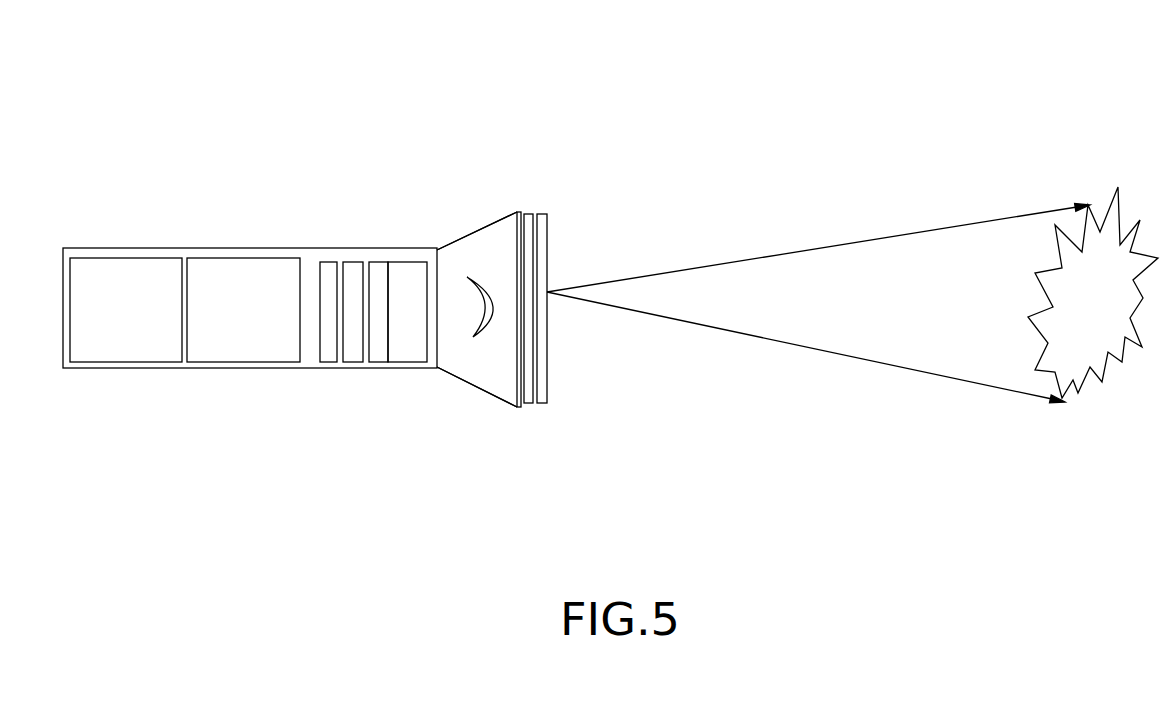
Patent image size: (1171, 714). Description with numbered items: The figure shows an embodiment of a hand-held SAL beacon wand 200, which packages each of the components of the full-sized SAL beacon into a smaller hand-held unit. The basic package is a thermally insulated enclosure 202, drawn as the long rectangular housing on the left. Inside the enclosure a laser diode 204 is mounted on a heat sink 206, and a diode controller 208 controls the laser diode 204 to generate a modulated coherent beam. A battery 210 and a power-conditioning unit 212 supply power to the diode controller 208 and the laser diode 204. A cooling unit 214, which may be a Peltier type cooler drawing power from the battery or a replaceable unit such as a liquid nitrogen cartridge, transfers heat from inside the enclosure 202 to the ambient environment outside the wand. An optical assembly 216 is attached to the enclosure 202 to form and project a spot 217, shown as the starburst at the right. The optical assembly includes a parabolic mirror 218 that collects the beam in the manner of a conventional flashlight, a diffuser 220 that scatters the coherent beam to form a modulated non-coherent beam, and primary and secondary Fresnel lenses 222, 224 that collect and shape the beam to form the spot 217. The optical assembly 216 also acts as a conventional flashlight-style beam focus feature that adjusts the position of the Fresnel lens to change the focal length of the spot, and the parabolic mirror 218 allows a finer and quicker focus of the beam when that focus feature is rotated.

The hand-held SAL beacon wand 200 is at (486, 82).
The thermally insulated enclosure 202 is at (103, 370).
The laser diode 204 is at (406, 366).
The heat sink 206 is at (378, 366).
The diode controller 208 is at (351, 366).
The battery 210 is at (225, 341).
The power-conditioning unit 212 is at (328, 365).
The cooling unit 214 is at (107, 352).
The optical assembly 216 is at (426, 238).
The spot 217 is at (1090, 372).
The parabolic mirror 218 is at (504, 212).
The diffuser 220 is at (473, 337).
The primary Fresnel lens 222 is at (528, 404).
The secondary Fresnel lens 224 is at (543, 404).